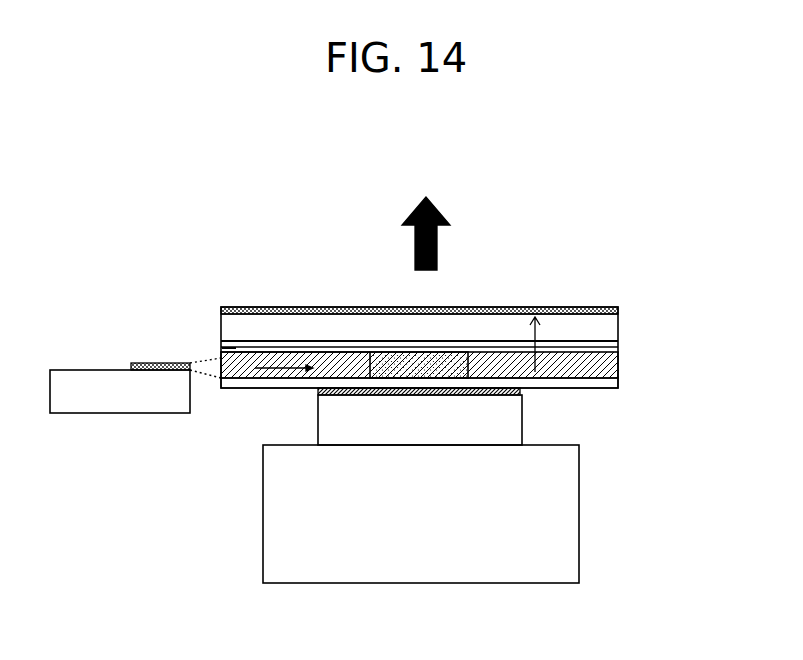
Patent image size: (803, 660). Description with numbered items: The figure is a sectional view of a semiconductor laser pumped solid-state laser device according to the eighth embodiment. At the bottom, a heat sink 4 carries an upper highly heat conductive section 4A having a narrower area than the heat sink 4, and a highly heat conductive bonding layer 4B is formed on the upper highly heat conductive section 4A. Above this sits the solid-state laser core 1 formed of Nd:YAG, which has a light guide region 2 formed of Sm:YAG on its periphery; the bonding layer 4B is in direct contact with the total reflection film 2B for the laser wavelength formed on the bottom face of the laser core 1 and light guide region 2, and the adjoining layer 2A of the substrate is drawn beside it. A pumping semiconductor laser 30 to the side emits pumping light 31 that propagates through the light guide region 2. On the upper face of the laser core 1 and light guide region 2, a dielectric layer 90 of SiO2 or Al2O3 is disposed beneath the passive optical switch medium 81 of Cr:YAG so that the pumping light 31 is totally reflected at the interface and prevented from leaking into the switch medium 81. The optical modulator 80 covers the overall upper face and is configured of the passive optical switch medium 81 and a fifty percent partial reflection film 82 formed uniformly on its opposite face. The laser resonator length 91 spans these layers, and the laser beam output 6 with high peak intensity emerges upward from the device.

The solid-state laser core 1 is at (395, 368).
The light guide region 2 is at (618, 353).
The substrate upper layer 2A is at (620, 370).
The total reflection film 2B is at (603, 383).
The heat sink 4 is at (556, 527).
The upper highly heat conductive section 4A is at (514, 420).
The highly heat conductive bonding layer 4B is at (317, 392).
The laser beam output 6 is at (443, 213).
The pumping semiconductor laser 30 is at (142, 363).
The pumping light 31 is at (262, 355).
The optical modulator 80 is at (497, 297).
The passive optical switch medium 81 is at (400, 330).
The partial reflection film 82 is at (458, 307).
The dielectric layer 90 is at (221, 349).
The laser resonator length 91 is at (540, 333).